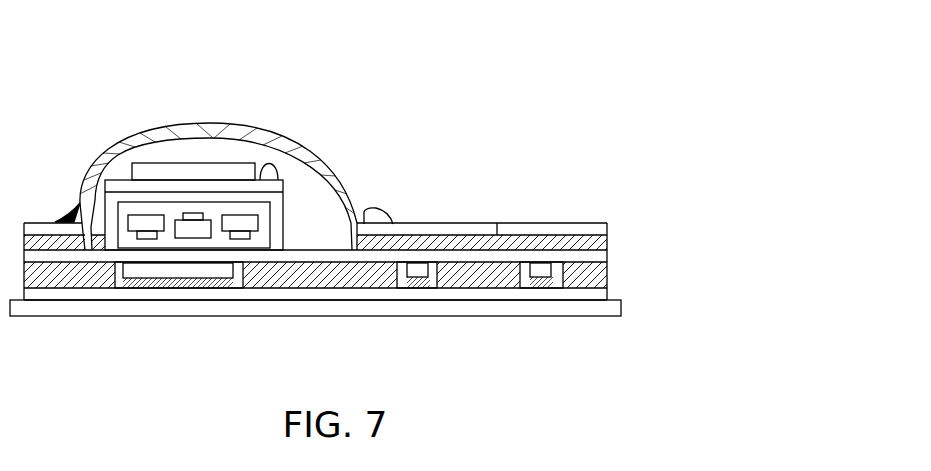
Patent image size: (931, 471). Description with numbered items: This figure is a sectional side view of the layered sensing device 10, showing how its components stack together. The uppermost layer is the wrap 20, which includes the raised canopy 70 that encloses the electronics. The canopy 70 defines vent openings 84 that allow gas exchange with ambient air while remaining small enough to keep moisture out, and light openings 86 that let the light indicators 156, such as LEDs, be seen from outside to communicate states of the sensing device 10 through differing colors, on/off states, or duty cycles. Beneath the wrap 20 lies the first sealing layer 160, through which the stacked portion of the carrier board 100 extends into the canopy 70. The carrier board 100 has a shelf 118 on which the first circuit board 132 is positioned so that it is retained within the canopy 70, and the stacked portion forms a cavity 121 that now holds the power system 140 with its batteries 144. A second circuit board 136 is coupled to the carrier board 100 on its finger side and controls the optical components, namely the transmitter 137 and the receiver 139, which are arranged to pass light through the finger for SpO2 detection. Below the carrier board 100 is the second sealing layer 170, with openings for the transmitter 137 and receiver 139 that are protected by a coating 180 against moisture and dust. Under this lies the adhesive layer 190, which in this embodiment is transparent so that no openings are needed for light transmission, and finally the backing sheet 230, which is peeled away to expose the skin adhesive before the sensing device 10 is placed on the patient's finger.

The sensing device 10 is at (478, 39).
The wrap 20 is at (584, 226).
The canopy 70 is at (223, 98).
The vent openings 84 is at (117, 141).
The light openings 86 is at (356, 160).
The carrier board 100 is at (609, 257).
The shelf 118 is at (92, 171).
The cavity 121 is at (110, 214).
The first circuit board 132 is at (163, 172).
The second circuit board 136 is at (137, 273).
The transmitter 137 is at (410, 279).
The receiver 139 is at (545, 280).
The power system 140 is at (225, 242).
The batteries 144 is at (200, 230).
The light indicators 156 is at (281, 143).
The first sealing layer 160 is at (610, 236).
The second sealing layer 170 is at (610, 275).
The coating 180 is at (513, 282).
The adhesive layer 190 is at (610, 293).
The backing sheet 230 is at (613, 317).